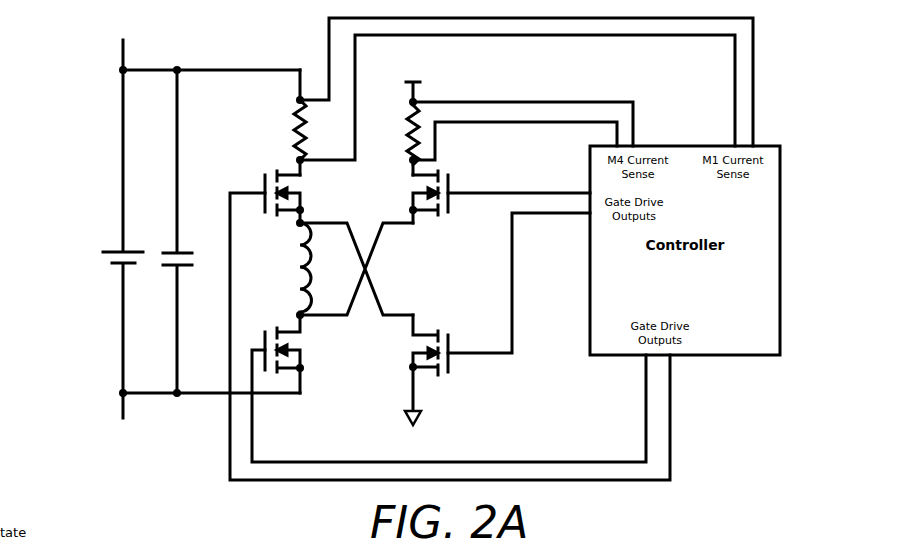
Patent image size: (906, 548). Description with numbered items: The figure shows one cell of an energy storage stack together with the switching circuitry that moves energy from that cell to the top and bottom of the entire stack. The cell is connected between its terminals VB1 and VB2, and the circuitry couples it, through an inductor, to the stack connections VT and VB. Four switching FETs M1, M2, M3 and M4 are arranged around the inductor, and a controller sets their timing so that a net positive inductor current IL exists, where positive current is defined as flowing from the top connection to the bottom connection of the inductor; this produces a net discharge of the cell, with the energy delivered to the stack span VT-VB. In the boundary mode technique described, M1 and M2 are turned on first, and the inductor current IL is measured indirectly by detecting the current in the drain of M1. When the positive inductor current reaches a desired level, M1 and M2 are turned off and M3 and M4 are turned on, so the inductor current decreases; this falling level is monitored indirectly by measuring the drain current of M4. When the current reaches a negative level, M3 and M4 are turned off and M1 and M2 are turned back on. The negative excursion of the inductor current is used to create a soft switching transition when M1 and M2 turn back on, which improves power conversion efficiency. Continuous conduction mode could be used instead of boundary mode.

The FET M1 is at (448, 325).
The FET M2 is at (449, 384).
The FET M3 is at (499, 294).
The FET M4 is at (499, 197).
The cell terminal VB1 is at (201, 219).
The cell terminal VB2 is at (202, 417).
The top of stack voltage VT is at (518, 102).
The bottom of stack voltage VB is at (424, 405).
The inductor current IL is at (282, 250).